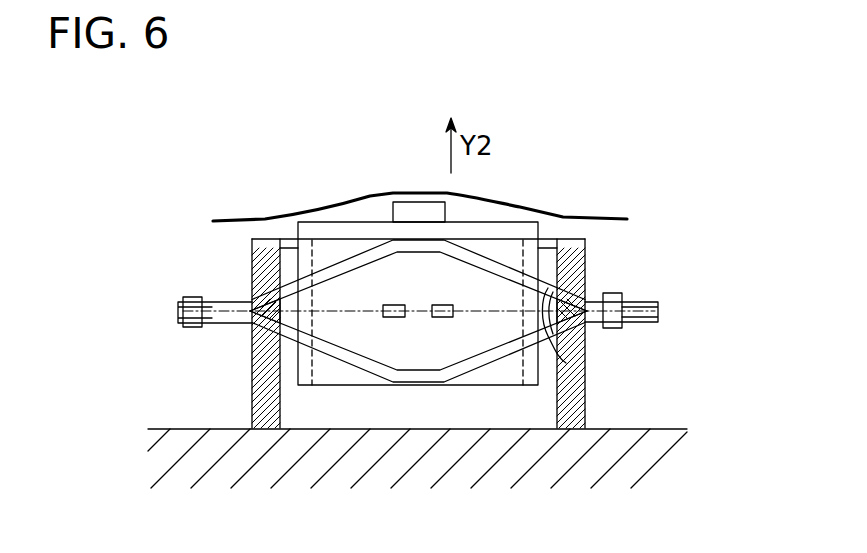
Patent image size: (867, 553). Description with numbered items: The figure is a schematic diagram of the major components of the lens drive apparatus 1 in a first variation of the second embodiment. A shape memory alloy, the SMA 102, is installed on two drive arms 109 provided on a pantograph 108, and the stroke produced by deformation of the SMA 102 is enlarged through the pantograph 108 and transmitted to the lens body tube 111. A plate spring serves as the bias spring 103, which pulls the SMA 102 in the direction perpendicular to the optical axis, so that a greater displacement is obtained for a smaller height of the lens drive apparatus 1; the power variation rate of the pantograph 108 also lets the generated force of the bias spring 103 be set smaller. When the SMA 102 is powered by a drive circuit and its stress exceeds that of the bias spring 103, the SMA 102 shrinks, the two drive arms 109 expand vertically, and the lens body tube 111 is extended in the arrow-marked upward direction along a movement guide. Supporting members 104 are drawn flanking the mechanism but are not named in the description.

The lens drive apparatus 1 is at (381, 116).
The SMA 102 is at (473, 313).
The bias spring 103 is at (523, 209).
The support pillars 104 is at (252, 262).
The pantograph 108 is at (585, 348).
The drive arms 109 is at (521, 317).
The lens body tube 111 is at (333, 250).